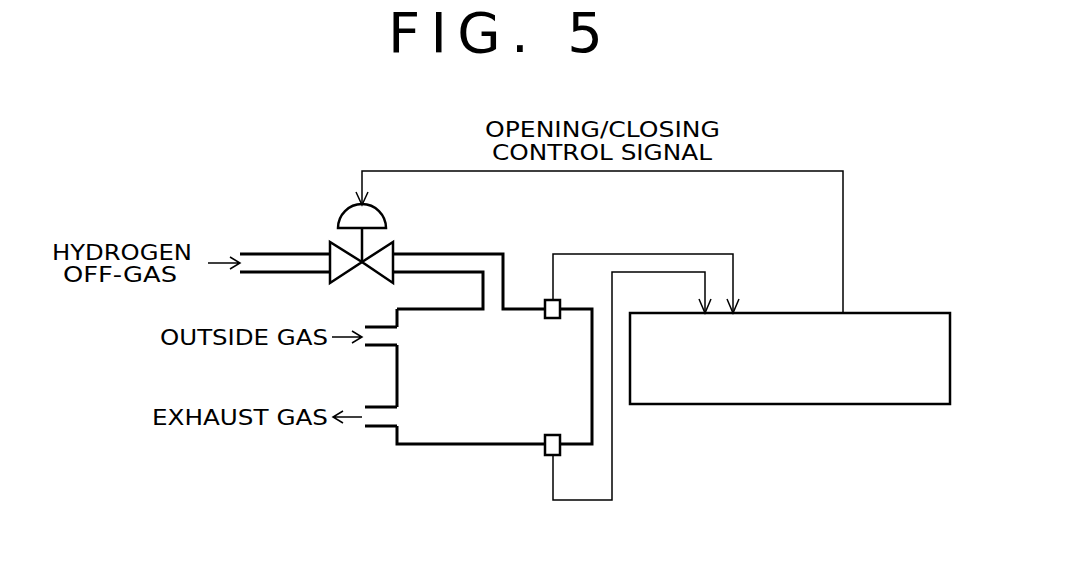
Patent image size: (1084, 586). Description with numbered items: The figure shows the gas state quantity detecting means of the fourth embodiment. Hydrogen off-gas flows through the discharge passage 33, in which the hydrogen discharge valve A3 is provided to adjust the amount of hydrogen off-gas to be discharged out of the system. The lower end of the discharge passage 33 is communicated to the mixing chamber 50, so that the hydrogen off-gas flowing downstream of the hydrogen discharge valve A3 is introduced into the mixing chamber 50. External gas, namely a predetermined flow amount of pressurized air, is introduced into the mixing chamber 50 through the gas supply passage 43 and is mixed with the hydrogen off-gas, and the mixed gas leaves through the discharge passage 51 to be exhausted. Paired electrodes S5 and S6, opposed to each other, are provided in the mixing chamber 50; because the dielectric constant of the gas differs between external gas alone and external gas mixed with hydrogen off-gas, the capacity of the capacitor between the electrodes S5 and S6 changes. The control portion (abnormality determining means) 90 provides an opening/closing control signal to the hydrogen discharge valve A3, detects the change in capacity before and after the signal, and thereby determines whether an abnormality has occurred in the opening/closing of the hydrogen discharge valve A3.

The discharge passage 33 is at (291, 253).
The hydrogen discharge valve A3 is at (387, 220).
The gas supply passage 43 is at (384, 327).
The discharge passage 51 is at (384, 407).
The mixing chamber 50 is at (453, 445).
The electrode S5 is at (545, 304).
The electrode S6 is at (545, 450).
The control portion (abnormality determining means) 90 is at (916, 312).